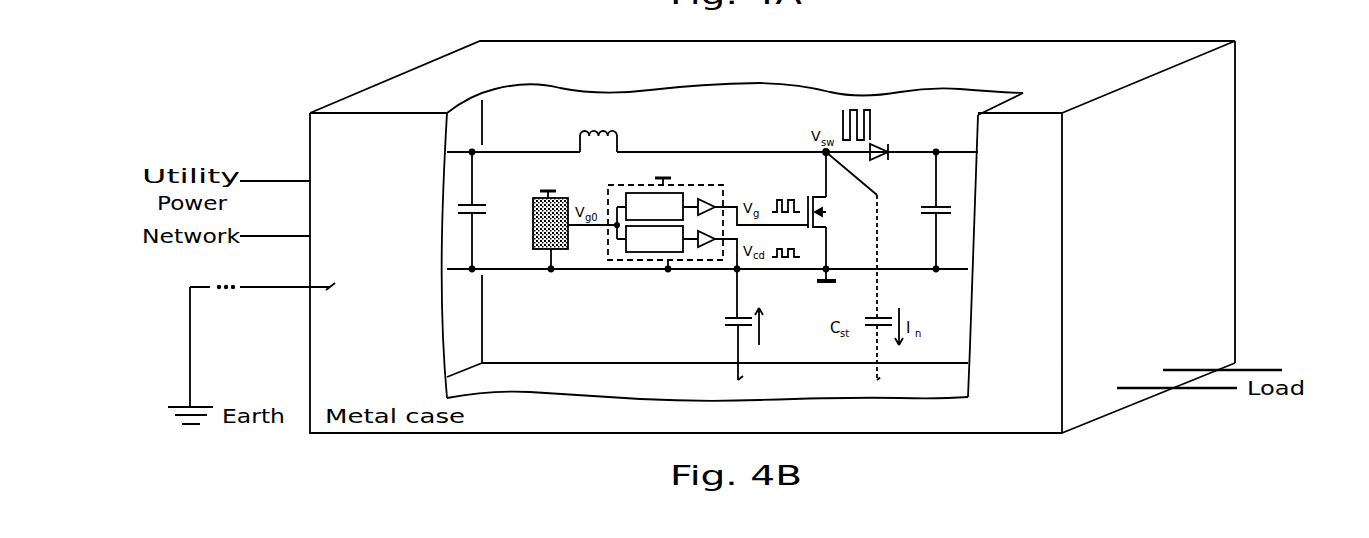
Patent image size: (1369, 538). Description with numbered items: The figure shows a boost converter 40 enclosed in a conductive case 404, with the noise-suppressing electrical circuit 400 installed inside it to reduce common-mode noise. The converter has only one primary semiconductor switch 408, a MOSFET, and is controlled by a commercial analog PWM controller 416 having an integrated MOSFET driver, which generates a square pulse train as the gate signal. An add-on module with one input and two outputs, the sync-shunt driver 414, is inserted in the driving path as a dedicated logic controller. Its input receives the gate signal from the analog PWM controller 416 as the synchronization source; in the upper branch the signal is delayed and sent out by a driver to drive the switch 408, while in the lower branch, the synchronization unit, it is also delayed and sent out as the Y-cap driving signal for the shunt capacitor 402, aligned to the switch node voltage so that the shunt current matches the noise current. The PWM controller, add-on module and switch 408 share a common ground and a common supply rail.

The boost converter 40 is at (1274, 56).
The electrical circuit 400 is at (689, 300).
The shunt capacitor 402 is at (767, 345).
The conductive case 404 is at (1195, 155).
The primary semiconductor switch 408 is at (791, 172).
The sync-shunt driver 414 is at (708, 181).
The analog PWM controller 416 is at (535, 200).